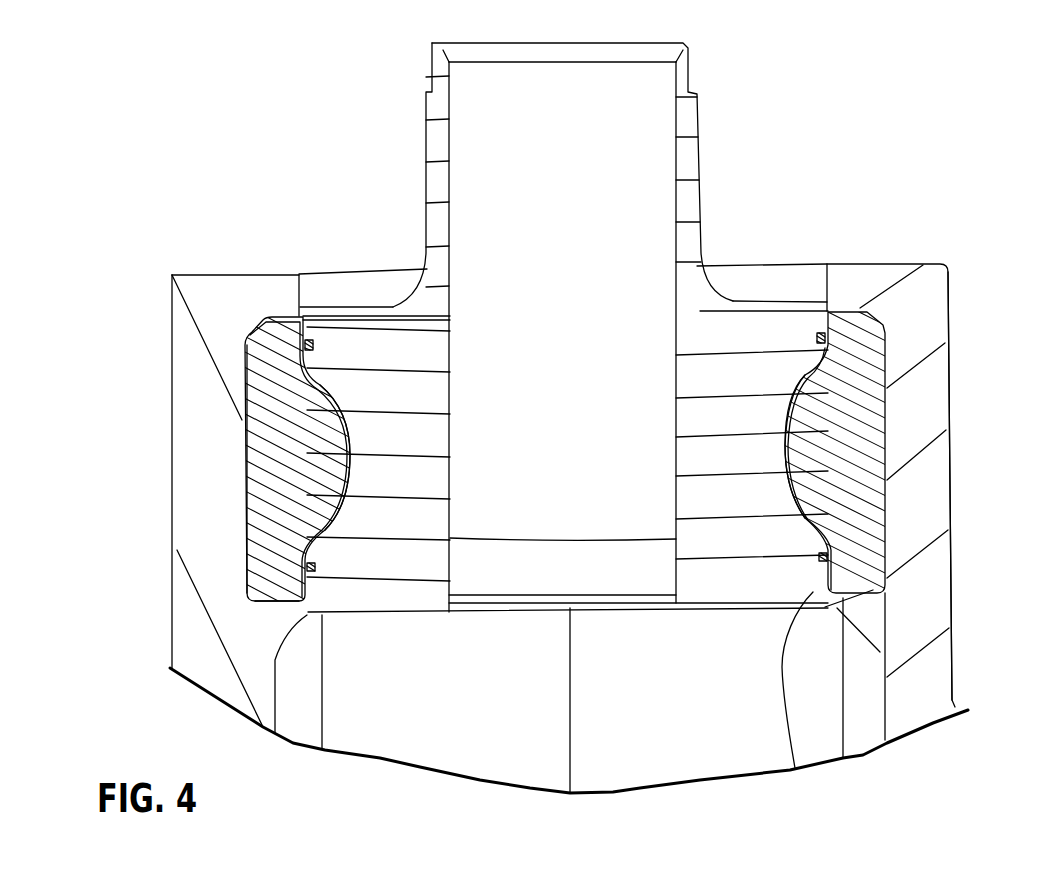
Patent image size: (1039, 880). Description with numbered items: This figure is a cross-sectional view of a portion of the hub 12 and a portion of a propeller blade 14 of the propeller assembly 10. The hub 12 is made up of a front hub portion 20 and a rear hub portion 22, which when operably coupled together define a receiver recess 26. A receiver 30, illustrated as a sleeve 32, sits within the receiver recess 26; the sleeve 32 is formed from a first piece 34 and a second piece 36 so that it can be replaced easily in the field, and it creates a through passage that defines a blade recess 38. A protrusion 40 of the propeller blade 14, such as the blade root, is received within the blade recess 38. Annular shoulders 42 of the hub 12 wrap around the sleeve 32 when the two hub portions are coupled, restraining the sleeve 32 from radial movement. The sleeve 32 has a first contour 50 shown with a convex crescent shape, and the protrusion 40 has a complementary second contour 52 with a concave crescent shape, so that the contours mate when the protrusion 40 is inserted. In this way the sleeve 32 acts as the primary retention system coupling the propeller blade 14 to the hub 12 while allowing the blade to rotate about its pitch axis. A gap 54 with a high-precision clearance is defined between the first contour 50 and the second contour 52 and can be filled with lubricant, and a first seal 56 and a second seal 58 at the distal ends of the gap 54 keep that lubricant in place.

The propeller assembly 10 is at (160, 194).
The hub 12 is at (857, 264).
The propeller blade 14 is at (701, 128).
The front hub portion 20 is at (230, 275).
The rear hub portion 22 is at (949, 308).
The receiver recess 26 is at (880, 592).
The receiver 30 is at (271, 611).
The sleeve 32 is at (249, 555).
The first piece 34 is at (273, 407).
The second piece 36 is at (838, 412).
The blade recess 38 is at (782, 810).
The protrusion 40 is at (425, 523).
The annular shoulder 42 is at (825, 278).
The first contour 50 is at (350, 467).
The second contour 52 is at (348, 463).
The gap 54 is at (788, 462).
The first seal 56 is at (830, 338).
The second seal 58 is at (830, 558).